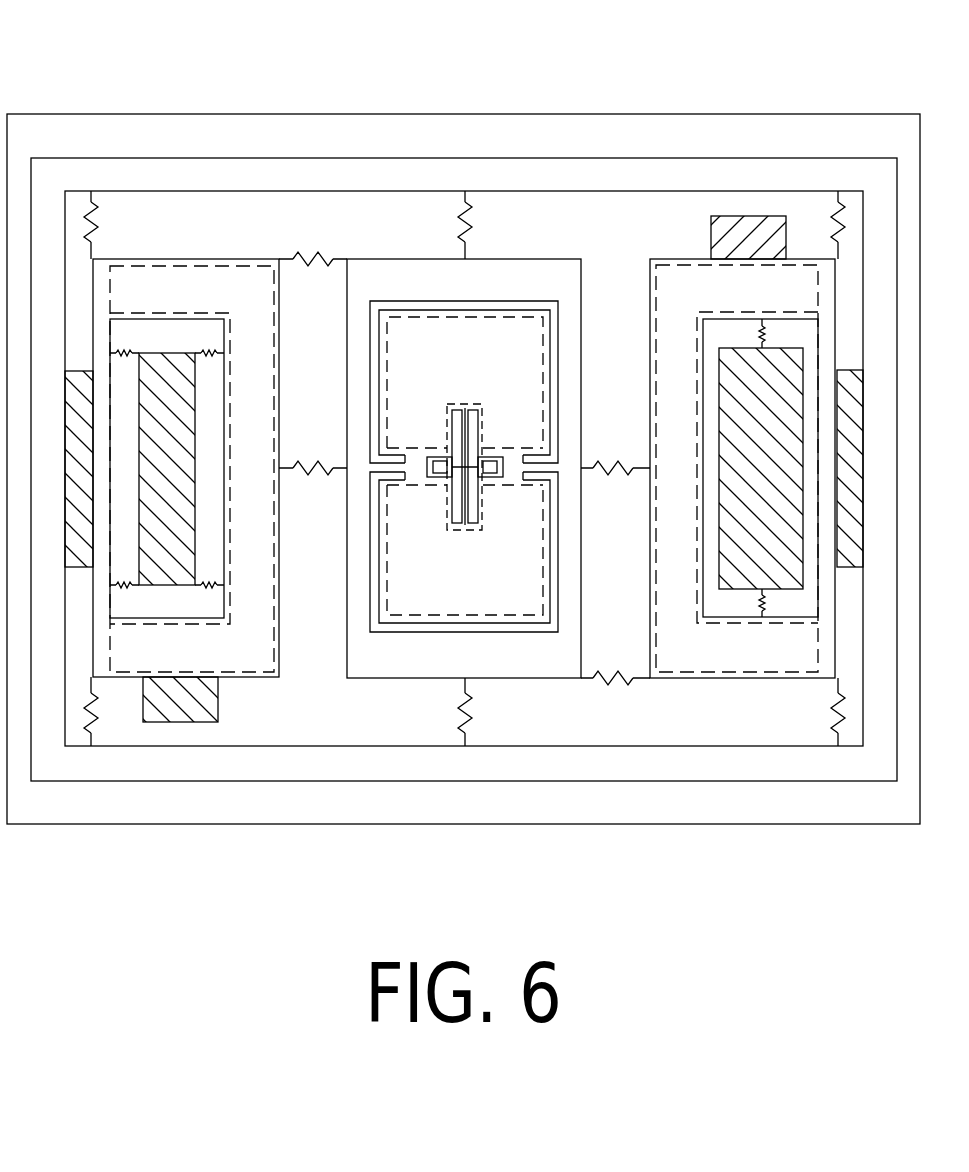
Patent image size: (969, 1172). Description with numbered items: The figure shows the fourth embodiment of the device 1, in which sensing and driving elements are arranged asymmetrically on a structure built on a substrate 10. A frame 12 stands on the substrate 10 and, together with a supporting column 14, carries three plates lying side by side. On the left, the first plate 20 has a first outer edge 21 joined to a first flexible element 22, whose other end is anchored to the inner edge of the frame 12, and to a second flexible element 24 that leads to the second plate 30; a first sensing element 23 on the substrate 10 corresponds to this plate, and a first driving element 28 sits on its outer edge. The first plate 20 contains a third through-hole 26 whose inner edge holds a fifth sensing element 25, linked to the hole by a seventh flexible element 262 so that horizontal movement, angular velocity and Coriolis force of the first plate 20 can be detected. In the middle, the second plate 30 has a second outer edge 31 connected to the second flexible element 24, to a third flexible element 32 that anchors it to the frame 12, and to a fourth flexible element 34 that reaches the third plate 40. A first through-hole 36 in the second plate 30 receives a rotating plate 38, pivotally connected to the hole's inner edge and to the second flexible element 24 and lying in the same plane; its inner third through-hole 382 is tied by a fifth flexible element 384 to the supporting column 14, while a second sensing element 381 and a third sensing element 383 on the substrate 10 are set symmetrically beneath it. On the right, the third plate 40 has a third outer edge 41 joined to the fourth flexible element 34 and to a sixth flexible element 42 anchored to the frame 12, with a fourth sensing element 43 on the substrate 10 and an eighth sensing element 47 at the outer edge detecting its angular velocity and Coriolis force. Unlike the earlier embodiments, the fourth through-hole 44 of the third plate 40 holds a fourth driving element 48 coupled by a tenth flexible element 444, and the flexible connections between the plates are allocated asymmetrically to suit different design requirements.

The microelectromechanical device 1 is at (864, 29).
The substrate 10 is at (54, 113).
The frame 12 is at (147, 157).
The supporting column 14 is at (482, 463).
The first plate 20 is at (250, 259).
The first outer edge 21 is at (283, 641).
The first flexible element 22 is at (98, 235).
The first sensing element 23 is at (258, 677).
The second flexible element 24 is at (322, 480).
The fifth sensing element 25 is at (147, 585).
The third through-hole 26 is at (227, 349).
The seventh flexible element 262 is at (205, 585).
The first driving element 28 is at (193, 722).
The second plate 30 is at (383, 259).
The second outer edge 31 is at (586, 302).
The third flexible element 32 is at (470, 240).
The fourth flexible element 34 is at (620, 478).
The first through-hole 36 is at (464, 449).
The rotating plate 38 is at (425, 632).
The second sensing element 381 is at (510, 628).
The third through-hole 382 is at (451, 504).
The third sensing element 383 is at (512, 317).
The fifth flexible element 384 is at (455, 450).
The third plate 40 is at (688, 259).
The third outer edge 41 is at (648, 433).
The sixth flexible element 42 is at (825, 235).
The fourth sensing element 43 is at (672, 678).
The fourth through-hole 44 is at (707, 361).
The tenth flexible element 444 is at (760, 600).
The eighth sensing element 47 is at (748, 216).
The fourth driving element 48 is at (783, 595).